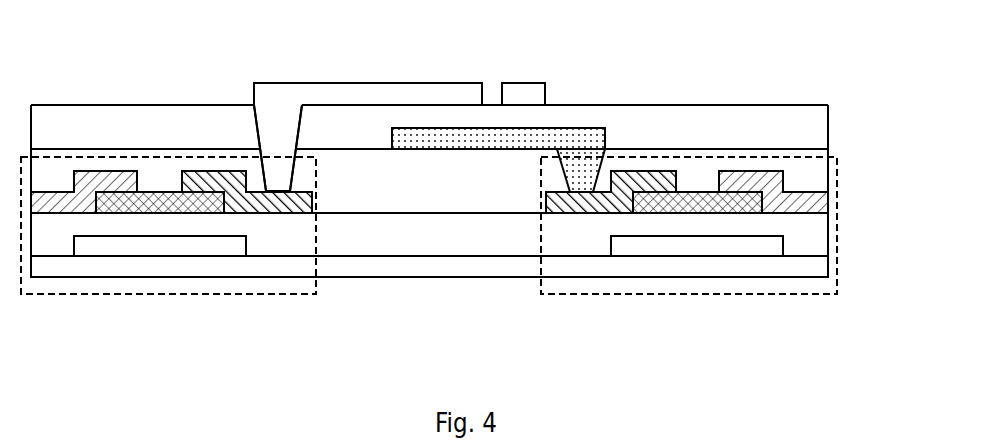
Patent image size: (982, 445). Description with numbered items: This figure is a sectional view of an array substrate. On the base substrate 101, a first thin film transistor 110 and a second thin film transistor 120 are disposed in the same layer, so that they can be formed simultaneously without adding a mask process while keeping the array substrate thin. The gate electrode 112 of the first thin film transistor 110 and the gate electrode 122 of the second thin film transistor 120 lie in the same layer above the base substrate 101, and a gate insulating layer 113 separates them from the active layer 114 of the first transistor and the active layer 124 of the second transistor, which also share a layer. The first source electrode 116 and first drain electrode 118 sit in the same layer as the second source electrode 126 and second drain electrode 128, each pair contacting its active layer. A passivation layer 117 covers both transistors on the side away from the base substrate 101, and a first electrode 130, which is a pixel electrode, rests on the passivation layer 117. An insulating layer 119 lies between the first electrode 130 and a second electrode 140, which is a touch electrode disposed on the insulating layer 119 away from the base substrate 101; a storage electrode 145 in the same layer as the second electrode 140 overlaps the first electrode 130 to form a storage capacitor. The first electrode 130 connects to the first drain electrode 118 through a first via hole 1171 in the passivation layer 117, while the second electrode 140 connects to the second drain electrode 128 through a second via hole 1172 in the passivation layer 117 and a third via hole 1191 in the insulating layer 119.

The base substrate 101 is at (340, 268).
The first thin film transistor 110 is at (193, 294).
The gate electrode 112 is at (93, 247).
The gate insulating layer 113 is at (515, 243).
The active layer 114 is at (157, 195).
The first source electrode 116 is at (96, 171).
The passivation layer 117 is at (376, 186).
The first drain electrode 118 is at (246, 205).
The insulating layer 119 is at (386, 118).
The second thin film transistor 120 is at (725, 294).
The gate electrode 122 is at (636, 247).
The active layer 124 is at (697, 195).
The second source electrode 126 is at (632, 175).
The second drain electrode 128 is at (775, 205).
The first electrode 130 is at (435, 138).
The second electrode 140 is at (320, 92).
The storage electrode 145 is at (523, 92).
The first via hole 1171 is at (583, 168).
The second via hole 1172 is at (280, 175).
The third via hole 1191 is at (271, 126).